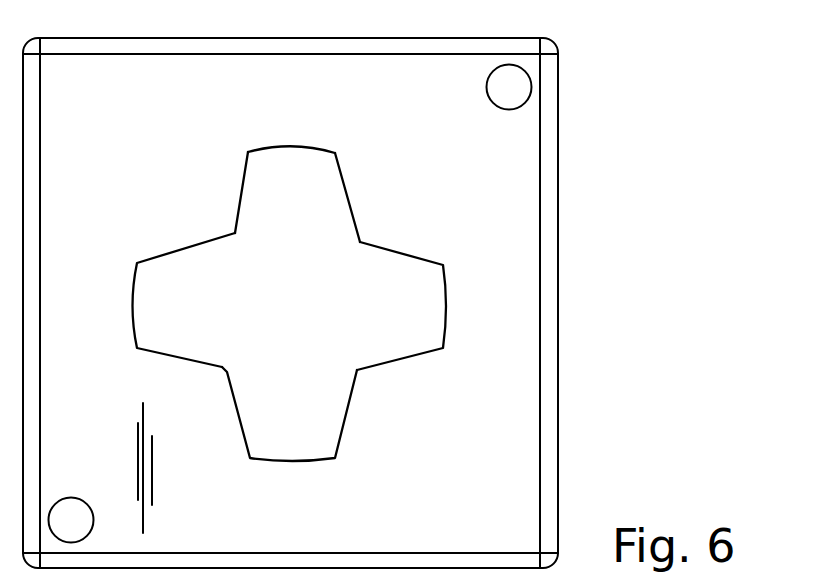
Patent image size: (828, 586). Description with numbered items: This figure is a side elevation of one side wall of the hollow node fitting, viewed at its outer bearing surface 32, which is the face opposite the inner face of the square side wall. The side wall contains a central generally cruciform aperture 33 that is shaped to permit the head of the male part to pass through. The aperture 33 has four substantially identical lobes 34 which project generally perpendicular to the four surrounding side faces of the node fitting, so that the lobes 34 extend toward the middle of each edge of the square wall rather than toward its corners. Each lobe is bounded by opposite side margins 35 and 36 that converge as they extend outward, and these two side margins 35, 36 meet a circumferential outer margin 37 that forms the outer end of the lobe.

The outer bearing surface 32 is at (503, 223).
The cruciform aperture 33 is at (389, 273).
The lobe 34 is at (302, 197).
The side margin 35 is at (240, 199).
The side margin 36 is at (350, 210).
The circumferential outer margin 37 is at (294, 145).